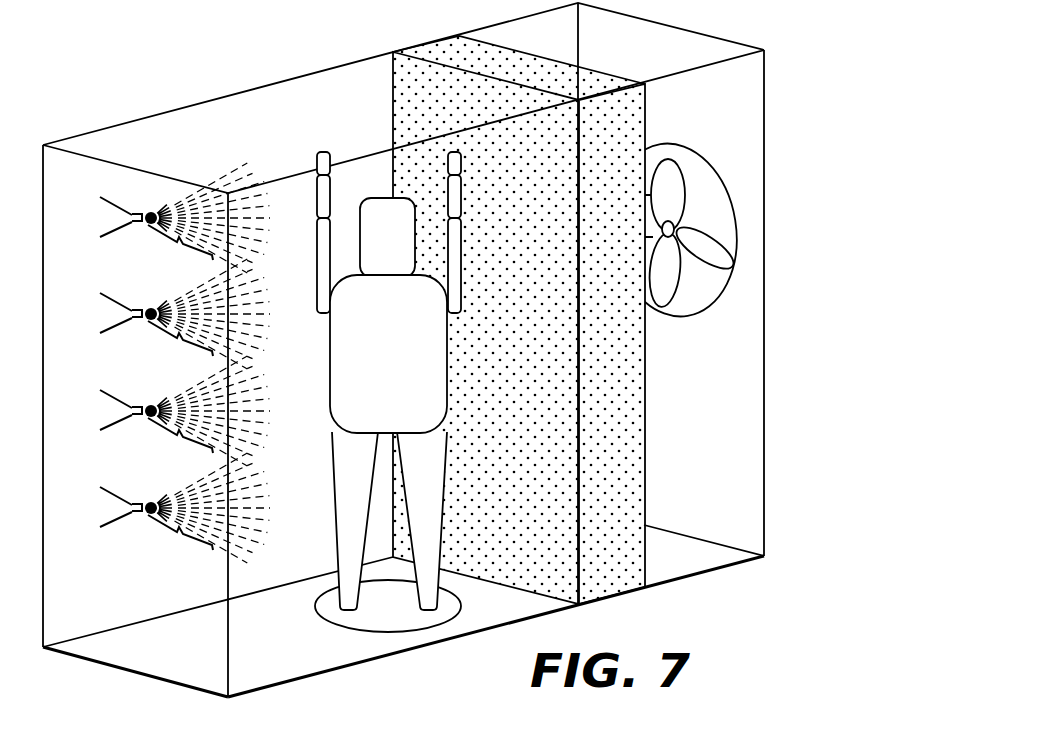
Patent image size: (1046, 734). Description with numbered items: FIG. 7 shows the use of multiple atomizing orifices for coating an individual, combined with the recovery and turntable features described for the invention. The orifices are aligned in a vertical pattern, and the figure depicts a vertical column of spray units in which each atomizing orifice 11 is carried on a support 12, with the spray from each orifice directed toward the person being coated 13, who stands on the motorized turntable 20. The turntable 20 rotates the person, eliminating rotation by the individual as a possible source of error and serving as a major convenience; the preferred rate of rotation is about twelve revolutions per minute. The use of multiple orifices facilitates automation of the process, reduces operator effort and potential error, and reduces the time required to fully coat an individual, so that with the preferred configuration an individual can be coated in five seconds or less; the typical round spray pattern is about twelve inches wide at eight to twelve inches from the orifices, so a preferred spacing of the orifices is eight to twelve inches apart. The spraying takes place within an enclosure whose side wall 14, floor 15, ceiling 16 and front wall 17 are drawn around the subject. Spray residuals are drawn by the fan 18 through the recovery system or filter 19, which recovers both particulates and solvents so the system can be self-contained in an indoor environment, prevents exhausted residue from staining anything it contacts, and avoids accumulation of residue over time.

The spray nozzle 11 is at (113, 231).
The nozzle support bracket 12 is at (177, 394).
The person being treated 13 is at (334, 522).
The side wall of chamber 14 is at (69, 612).
The floor of chamber 15 is at (264, 655).
The ceiling of chamber 16 is at (199, 151).
The front edge of chamber 17 is at (169, 663).
The exhaust fan 18 is at (683, 287).
The recovery system or filter 19 is at (610, 548).
The motorized turntable 20 is at (367, 620).